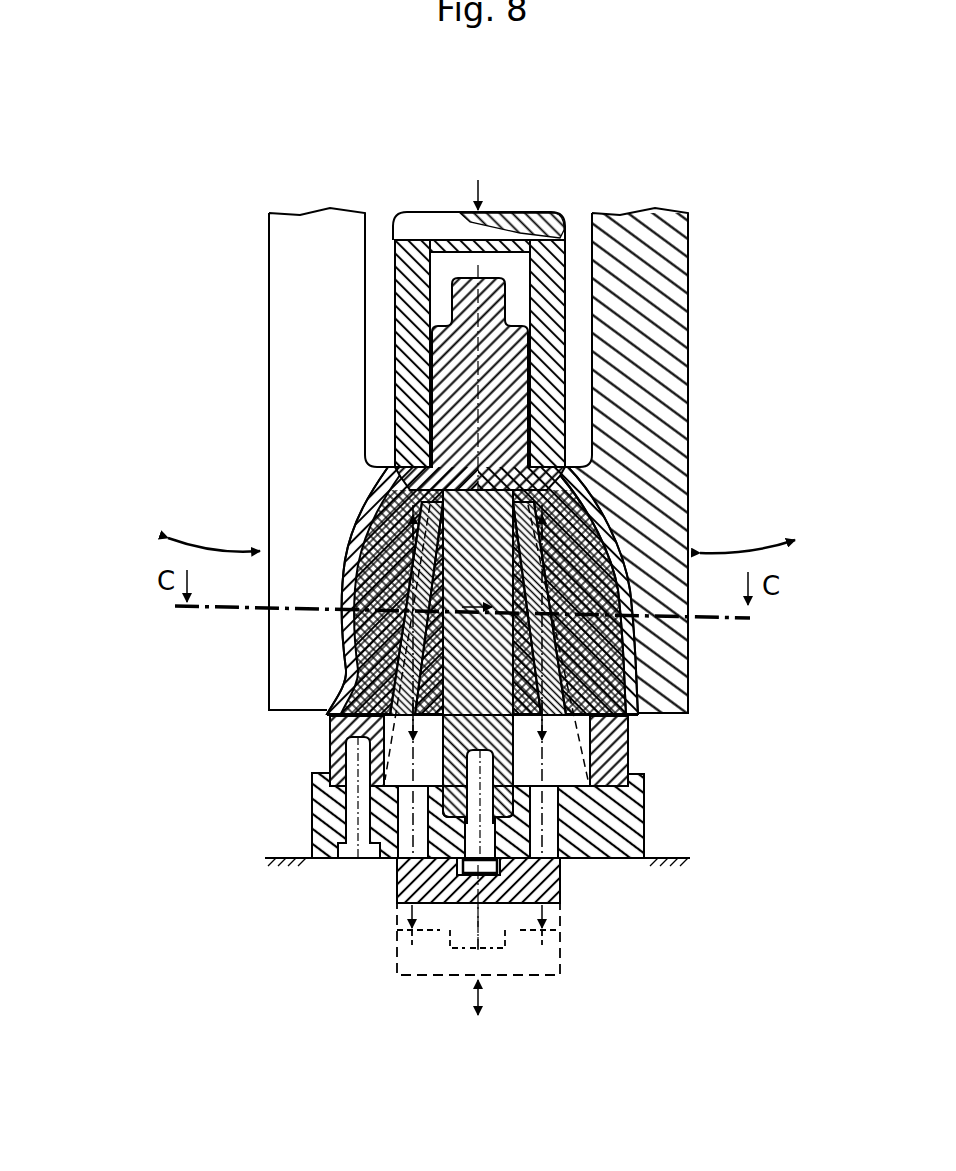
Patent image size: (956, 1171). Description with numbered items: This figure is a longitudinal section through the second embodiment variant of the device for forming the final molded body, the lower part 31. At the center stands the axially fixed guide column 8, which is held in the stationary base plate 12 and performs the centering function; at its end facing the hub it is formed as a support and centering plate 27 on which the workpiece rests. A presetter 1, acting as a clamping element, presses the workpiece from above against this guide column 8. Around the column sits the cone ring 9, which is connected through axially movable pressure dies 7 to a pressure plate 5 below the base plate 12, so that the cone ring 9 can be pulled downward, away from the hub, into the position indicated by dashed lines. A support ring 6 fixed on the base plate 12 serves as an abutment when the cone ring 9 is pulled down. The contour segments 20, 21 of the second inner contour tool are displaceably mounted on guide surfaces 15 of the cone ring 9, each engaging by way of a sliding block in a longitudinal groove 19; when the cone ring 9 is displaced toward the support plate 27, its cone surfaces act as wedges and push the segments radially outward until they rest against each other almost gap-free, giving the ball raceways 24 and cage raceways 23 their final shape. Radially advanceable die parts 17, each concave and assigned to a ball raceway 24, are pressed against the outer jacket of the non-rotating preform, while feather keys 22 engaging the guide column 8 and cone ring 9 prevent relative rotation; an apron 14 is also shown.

The presetter 1 is at (549, 238).
The pressure plate 5 is at (560, 887).
The support ring 6 is at (630, 752).
The pressure die 7 is at (410, 845).
The guide column 8 is at (372, 651).
The cone ring 9 is at (370, 617).
The base plate 12 is at (605, 823).
The apron 14 is at (345, 690).
The guide surface 15 is at (372, 572).
The die part 17 is at (300, 263).
The longitudinal groove 19 is at (360, 675).
The contour segment 20 is at (358, 592).
The contour segment 21 is at (612, 530).
The feather keys 22 is at (332, 715).
The cage raceway 23 is at (372, 527).
The ball raceway 24 is at (627, 550).
The support and centering plate 27 is at (578, 447).
The lower part 31 is at (655, 654).